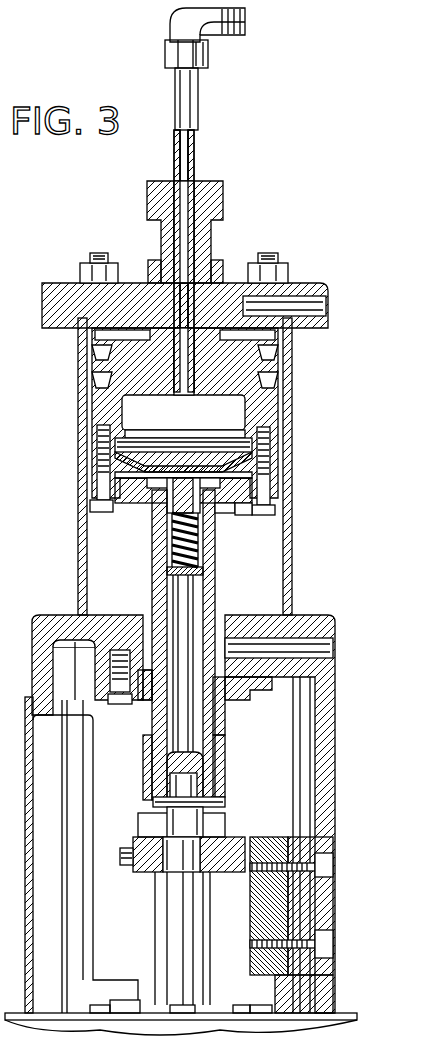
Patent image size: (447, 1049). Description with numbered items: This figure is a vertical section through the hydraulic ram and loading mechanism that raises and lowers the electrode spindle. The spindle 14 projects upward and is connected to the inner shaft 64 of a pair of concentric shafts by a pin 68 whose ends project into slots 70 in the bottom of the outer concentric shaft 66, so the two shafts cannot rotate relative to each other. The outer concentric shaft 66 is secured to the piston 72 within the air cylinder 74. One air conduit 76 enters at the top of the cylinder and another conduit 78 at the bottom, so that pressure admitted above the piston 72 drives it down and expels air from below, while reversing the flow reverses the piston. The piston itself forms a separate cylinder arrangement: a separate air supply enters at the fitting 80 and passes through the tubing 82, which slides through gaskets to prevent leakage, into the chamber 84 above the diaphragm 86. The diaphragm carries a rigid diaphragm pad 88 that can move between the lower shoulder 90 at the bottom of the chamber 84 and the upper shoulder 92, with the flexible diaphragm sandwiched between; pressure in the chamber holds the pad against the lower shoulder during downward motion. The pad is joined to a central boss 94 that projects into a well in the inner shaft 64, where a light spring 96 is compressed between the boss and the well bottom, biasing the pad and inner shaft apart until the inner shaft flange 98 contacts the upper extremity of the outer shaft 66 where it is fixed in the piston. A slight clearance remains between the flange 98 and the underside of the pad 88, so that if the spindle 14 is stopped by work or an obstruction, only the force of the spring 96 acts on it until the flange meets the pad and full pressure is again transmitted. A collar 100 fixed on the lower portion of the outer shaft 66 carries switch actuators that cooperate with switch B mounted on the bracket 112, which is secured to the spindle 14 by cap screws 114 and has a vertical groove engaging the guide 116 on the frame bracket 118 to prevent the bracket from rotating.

The fitting 80 is at (242, 33).
The tubing 82 is at (197, 152).
The conduit 76 is at (318, 306).
The air cylinder 74 is at (85, 580).
The shoulder 90 is at (100, 487).
The upper shoulder 92 is at (130, 440).
The chamber 84 is at (203, 418).
The diaphragm 86 is at (212, 467).
The diaphragm pad 88 is at (258, 470).
The piston 72 is at (137, 503).
The outer concentric shaft 66 is at (150, 725).
The spring 96 is at (193, 550).
The central boss 94 is at (227, 512).
The inner shaft flange 98 is at (245, 515).
The conduit 78 is at (318, 648).
The collar 100 is at (142, 750).
The inner shaft 64 is at (205, 730).
The pin 68 is at (220, 800).
The slots 70 is at (155, 780).
The switch B is at (220, 830).
The bracket 112 is at (142, 873).
The cap screws 114 is at (147, 863).
The guide 116 is at (260, 910).
The frame bracket 118 is at (287, 927).
The spindle 14 is at (173, 960).